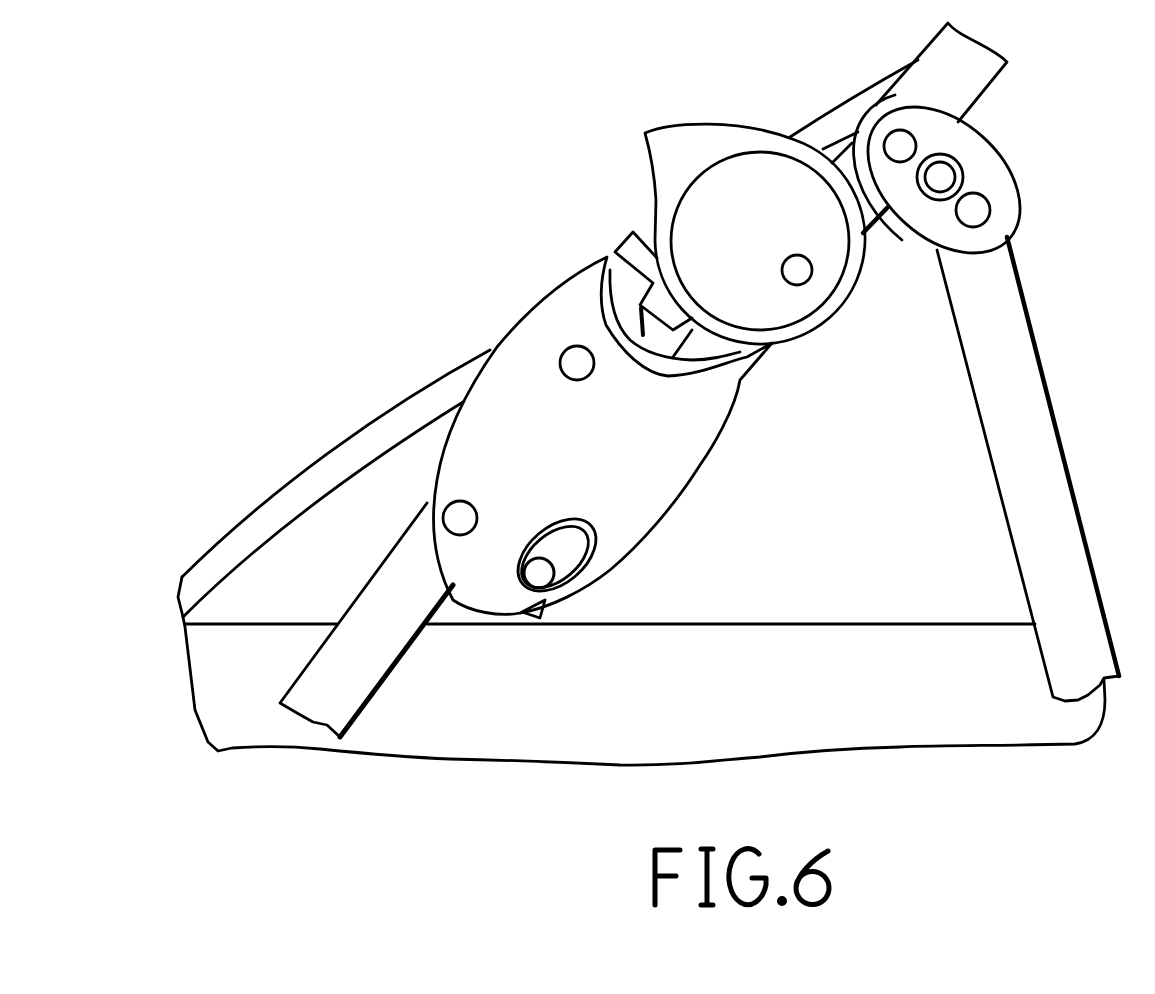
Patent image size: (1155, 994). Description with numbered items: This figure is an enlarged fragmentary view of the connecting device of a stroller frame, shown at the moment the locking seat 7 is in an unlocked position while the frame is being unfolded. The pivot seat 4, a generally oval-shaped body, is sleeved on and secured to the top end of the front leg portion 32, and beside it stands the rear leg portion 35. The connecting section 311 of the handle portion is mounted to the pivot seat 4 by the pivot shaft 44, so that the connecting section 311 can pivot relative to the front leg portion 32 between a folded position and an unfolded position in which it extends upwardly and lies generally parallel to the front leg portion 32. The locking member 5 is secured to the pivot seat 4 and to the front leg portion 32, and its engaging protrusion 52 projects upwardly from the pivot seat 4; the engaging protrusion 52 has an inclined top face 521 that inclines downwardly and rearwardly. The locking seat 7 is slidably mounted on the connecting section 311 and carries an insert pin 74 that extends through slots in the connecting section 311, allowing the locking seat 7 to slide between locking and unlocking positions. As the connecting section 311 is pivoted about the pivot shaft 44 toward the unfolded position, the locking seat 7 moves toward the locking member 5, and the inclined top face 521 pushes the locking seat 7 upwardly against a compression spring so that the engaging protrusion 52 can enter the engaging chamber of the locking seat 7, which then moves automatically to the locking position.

The pivot seat 4 is at (663, 465).
The pivot shaft 44 is at (537, 577).
The locking member 5 is at (600, 236).
The engaging protrusion 52 is at (633, 250).
The inclined top face 521 is at (645, 235).
The locking seat 7 is at (733, 137).
The insert pin 74 is at (797, 273).
The front leg portion 32 is at (373, 668).
The rear leg portion 35 is at (1038, 462).
The connecting section 311 is at (967, 78).